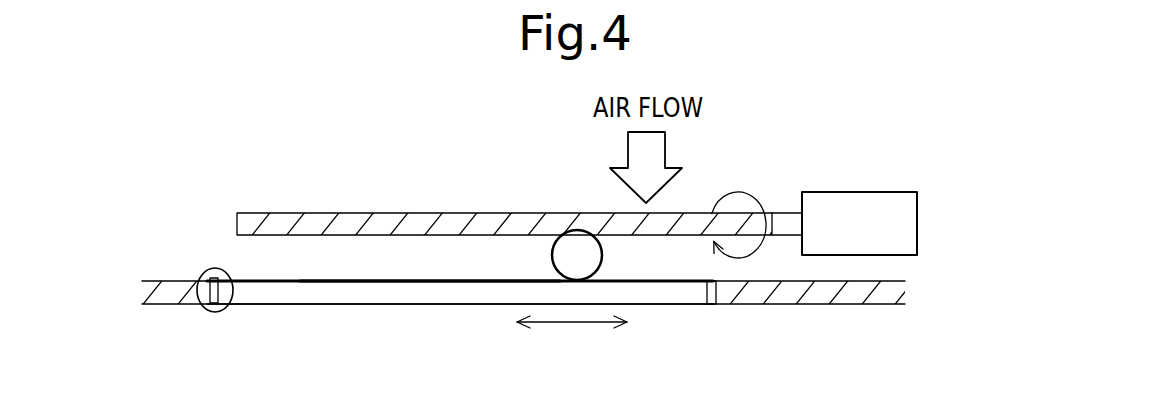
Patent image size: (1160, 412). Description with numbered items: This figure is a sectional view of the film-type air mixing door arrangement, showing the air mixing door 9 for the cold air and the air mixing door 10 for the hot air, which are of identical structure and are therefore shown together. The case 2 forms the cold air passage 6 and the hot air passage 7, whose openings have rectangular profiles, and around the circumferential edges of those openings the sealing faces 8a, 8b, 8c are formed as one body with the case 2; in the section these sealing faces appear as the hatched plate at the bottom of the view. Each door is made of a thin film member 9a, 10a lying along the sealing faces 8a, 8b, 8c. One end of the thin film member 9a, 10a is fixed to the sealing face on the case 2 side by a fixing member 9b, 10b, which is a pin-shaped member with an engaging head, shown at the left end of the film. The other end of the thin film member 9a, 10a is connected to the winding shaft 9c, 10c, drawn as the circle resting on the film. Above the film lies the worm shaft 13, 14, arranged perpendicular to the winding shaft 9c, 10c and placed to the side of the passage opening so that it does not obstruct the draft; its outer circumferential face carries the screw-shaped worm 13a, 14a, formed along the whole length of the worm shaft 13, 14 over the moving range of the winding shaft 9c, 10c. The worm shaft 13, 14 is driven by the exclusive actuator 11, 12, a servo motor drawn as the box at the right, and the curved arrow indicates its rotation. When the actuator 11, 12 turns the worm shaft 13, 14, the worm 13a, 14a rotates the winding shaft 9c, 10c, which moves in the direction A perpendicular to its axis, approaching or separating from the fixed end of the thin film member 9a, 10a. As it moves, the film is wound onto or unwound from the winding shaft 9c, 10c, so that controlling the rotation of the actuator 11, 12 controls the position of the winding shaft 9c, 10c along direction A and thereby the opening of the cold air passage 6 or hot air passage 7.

The case 2 is at (860, 304).
The cold air passage 6 is at (460, 346).
The hot air passage 7 is at (363, 304).
The sealing face 8a is at (739, 328).
The sealing face 8b is at (739, 328).
The sealing face 8c is at (728, 277).
The air mixing door 9 is at (460, 202).
The air mixing door 10 is at (299, 274).
The thin film member 9a is at (430, 202).
The thin film member 10a is at (392, 280).
The fixing member 9b is at (189, 239).
The fixing member 10b is at (213, 268).
The winding shaft 9c is at (519, 309).
The winding shaft 10c is at (563, 257).
The actuator 11 is at (906, 223).
The actuator 12 is at (917, 225).
The worm shaft 13 is at (760, 190).
The worm shaft 14 is at (790, 223).
The worm 13a is at (514, 193).
The worm 14a is at (518, 226).
The direction A is at (575, 322).